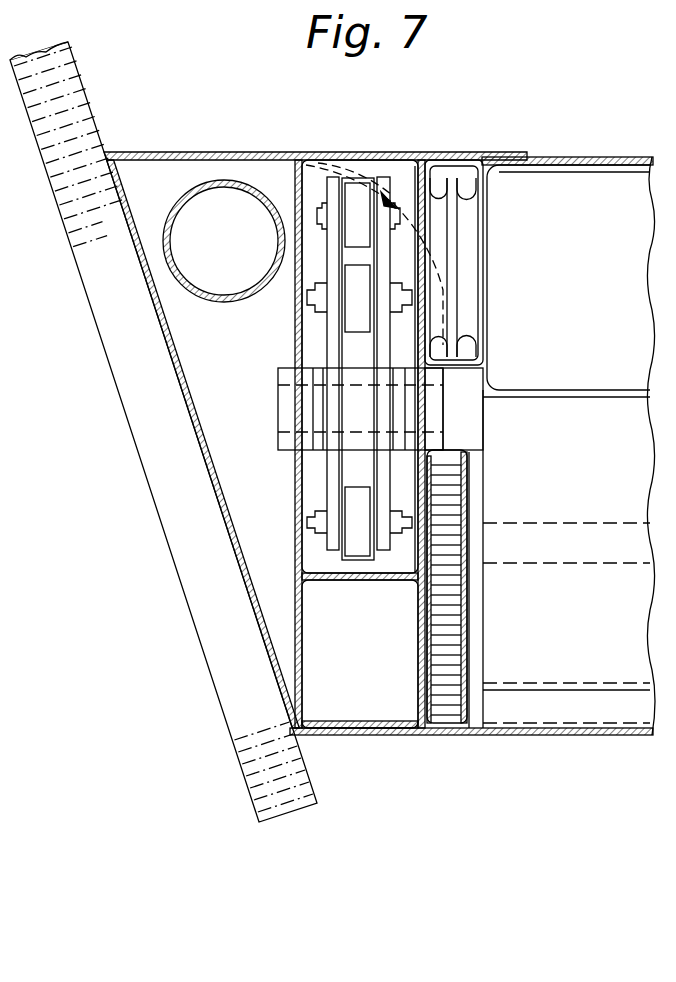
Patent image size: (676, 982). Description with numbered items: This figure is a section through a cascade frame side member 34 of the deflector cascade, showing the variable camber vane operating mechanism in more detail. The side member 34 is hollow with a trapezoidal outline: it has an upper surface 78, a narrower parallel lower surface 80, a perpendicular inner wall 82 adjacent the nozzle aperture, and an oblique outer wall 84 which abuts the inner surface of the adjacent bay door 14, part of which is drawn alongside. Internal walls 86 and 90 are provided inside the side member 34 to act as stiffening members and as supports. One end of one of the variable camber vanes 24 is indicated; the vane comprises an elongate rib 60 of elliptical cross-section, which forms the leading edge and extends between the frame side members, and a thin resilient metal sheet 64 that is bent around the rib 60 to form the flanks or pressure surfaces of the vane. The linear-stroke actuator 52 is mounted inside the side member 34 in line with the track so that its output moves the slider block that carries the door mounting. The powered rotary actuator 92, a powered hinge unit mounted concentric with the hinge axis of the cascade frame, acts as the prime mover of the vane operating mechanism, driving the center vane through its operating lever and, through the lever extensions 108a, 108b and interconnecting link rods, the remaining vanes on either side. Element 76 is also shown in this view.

The door 14 is at (125, 386).
The variable camber vane 24 is at (615, 142).
The frame side member 34 is at (315, 404).
The linear-stroke actuator 52 is at (241, 252).
The elongate rib 60 is at (609, 302).
The thin metal sheet 64 is at (614, 478).
The rack 76 is at (470, 503).
The upper surface 78 is at (366, 152).
The lower surface 80 is at (380, 735).
The inner wall 82 is at (418, 627).
The oblique outer wall 84 is at (216, 462).
The internal wall 86 is at (295, 310).
The internal wall 90 is at (367, 580).
The powered rotary actuator 92 is at (463, 240).
The left guide bar 108a is at (332, 478).
The right guide bar 108b is at (380, 487).